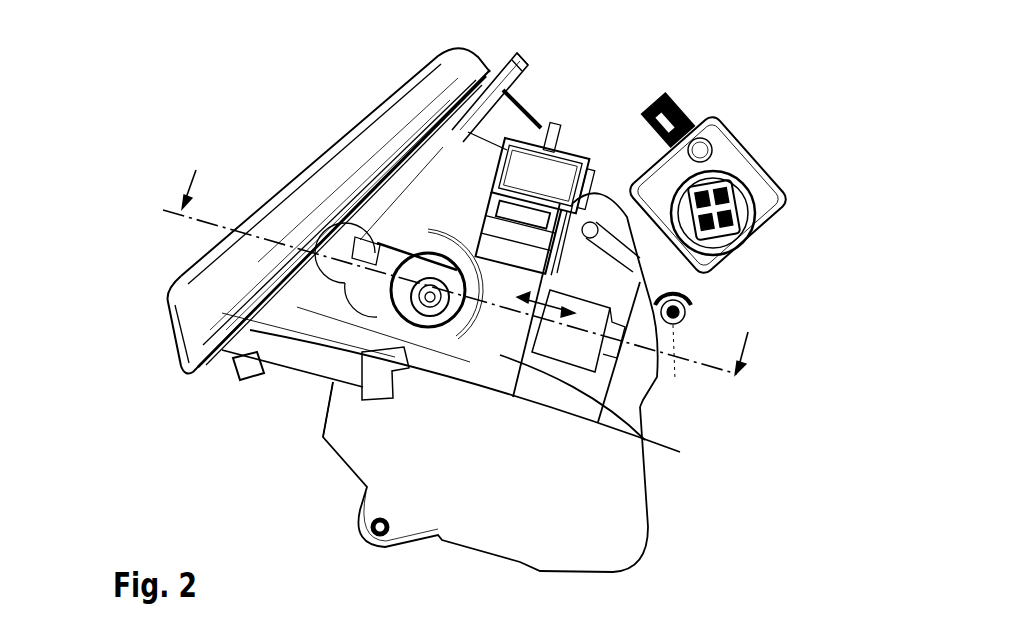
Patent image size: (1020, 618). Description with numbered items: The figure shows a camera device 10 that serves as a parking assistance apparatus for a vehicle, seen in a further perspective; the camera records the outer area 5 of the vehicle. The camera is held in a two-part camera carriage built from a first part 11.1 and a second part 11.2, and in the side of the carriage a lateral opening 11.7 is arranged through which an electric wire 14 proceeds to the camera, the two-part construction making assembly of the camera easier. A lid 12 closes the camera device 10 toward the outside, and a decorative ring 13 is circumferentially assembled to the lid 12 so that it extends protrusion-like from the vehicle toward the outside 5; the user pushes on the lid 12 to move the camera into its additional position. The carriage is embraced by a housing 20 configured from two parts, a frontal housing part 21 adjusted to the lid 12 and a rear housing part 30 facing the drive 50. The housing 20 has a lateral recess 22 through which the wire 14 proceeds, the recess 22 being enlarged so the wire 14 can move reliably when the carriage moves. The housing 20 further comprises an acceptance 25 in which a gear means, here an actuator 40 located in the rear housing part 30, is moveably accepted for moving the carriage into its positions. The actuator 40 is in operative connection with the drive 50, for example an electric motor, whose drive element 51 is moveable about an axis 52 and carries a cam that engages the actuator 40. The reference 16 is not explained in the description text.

The outer area 5 is at (216, 92).
The camera device 10 is at (582, 88).
The first part of the carriage 11.1 is at (377, 287).
The second part of the carriage 11.2 is at (637, 427).
The lateral opening 11.7 is at (432, 286).
The lid 12 is at (297, 162).
The decorative ring 13 is at (435, 88).
The electric wire 14 is at (432, 302).
The actuator 16 is at (554, 197).
The housing 20 is at (483, 155).
The frontal housing part 21 is at (490, 95).
The lateral recess 22 is at (297, 352).
The acceptance 25 is at (640, 260).
The rear housing part 30 is at (615, 513).
The actuator 40 is at (592, 207).
The drive 50 is at (665, 182).
The drive element 51 is at (688, 308).
The axis 52 is at (690, 333).